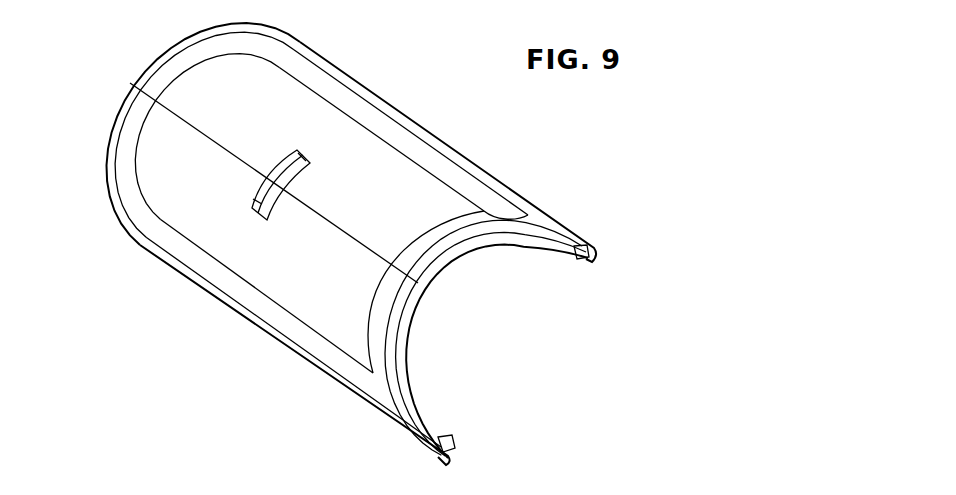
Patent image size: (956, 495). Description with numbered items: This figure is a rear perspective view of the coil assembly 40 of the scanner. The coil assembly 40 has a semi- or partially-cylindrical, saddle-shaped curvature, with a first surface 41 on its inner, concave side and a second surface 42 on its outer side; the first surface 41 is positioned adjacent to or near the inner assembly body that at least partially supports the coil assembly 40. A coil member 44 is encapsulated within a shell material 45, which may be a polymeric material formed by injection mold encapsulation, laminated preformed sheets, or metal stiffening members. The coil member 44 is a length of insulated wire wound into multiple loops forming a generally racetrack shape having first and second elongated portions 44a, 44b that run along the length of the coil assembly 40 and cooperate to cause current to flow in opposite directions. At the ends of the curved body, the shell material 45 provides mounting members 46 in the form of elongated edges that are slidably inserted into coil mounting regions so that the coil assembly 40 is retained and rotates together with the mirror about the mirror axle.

The coil assembly 40 is at (527, 200).
The first surface 41 is at (412, 415).
The second surface 42 is at (410, 420).
The coil member 44 is at (331, 207).
The first elongated portion 44a is at (345, 100).
The second elongated portion 44b is at (293, 332).
The shell material 45 is at (480, 177).
The mounting member 46 is at (590, 262).